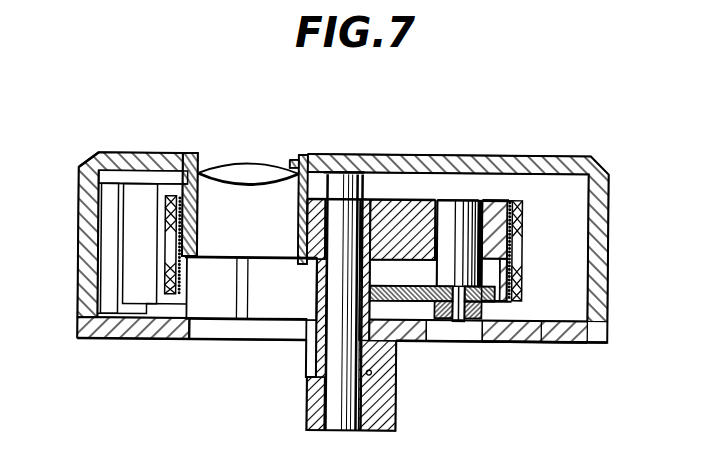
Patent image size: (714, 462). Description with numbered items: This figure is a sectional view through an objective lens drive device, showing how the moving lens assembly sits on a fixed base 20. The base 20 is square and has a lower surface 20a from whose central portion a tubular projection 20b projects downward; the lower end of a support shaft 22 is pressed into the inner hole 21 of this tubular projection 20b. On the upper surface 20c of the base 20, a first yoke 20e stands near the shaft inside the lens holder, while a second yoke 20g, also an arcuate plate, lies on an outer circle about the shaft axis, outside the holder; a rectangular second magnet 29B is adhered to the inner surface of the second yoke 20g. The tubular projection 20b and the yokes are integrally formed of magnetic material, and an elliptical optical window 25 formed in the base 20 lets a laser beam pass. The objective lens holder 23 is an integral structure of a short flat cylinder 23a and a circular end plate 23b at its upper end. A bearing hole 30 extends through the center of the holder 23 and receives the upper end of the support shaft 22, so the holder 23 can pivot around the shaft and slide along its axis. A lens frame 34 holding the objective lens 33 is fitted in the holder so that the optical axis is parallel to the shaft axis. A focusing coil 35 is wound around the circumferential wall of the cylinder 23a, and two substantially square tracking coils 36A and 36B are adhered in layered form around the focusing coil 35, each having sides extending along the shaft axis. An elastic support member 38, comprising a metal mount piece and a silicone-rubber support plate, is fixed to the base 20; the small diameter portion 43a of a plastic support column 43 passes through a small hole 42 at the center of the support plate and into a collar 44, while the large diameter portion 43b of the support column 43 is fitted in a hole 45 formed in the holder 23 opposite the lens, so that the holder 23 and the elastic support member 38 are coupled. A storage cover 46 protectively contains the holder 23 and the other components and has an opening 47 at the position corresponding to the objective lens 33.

The base 20 is at (602, 340).
The lower surface 20a is at (565, 340).
The tubular projection 20b is at (397, 418).
The upper surface 20c is at (545, 316).
The first yoke 20e is at (253, 300).
The second yoke 20g is at (108, 264).
The inner hole 21 is at (382, 301).
The support shaft 22 is at (330, 410).
The objective lens holder 23 is at (503, 191).
The flat cylinder 23a is at (510, 298).
The end plate 23b is at (505, 199).
The optical window 25 is at (192, 326).
The second magnet 29B is at (137, 282).
The bearing hole 30 is at (326, 287).
The objective lens 33 is at (258, 167).
The lens frame 34 is at (303, 153).
The focusing coil 35 is at (521, 249).
The tracking coil 36A is at (515, 255).
The tracking coil 36B is at (172, 228).
The elastic support member 38 is at (373, 370).
The small hole 42 is at (413, 302).
The support column 43 is at (457, 192).
The small diameter portion 43a is at (462, 318).
The large diameter portion 43b is at (443, 203).
The collar 44 is at (458, 243).
The hole 45 is at (479, 195).
The storage cover 46 is at (86, 162).
The opening 47 is at (190, 152).